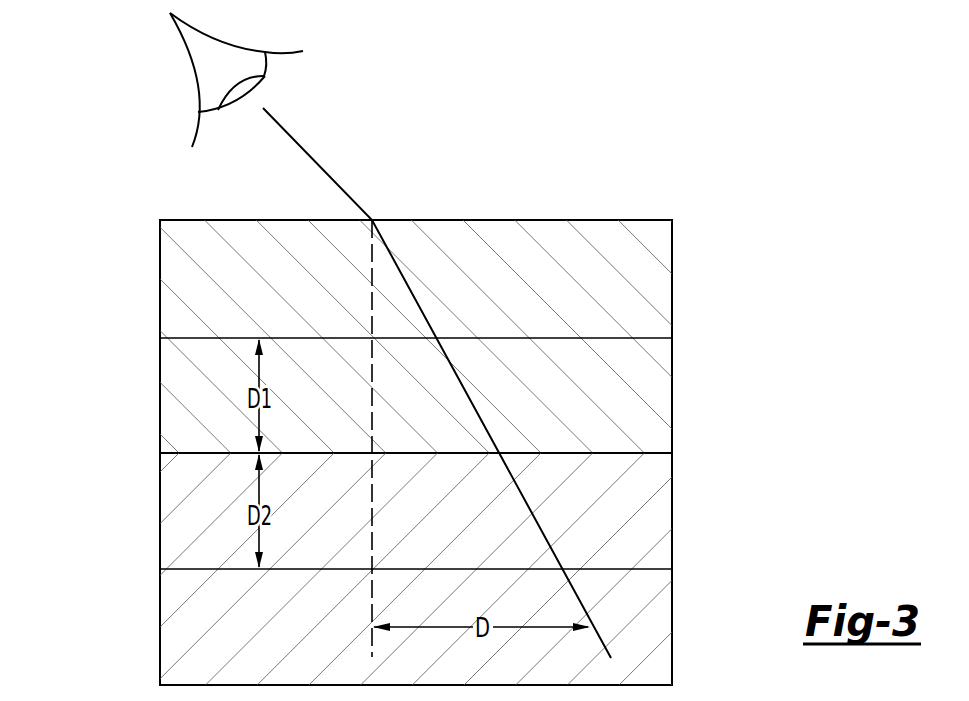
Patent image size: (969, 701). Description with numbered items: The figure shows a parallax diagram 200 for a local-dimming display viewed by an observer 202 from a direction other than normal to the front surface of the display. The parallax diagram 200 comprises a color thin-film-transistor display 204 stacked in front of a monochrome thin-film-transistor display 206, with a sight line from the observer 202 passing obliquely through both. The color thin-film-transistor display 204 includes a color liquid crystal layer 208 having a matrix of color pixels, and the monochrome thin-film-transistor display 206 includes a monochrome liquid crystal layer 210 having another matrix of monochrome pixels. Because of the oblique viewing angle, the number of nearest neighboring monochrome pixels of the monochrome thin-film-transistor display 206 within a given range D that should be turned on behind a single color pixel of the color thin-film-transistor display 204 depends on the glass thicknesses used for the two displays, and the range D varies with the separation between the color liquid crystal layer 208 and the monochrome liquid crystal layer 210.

The parallax diagram 200 is at (451, 382).
The observer 202 is at (190, 53).
The color thin-film-transistor display 204 is at (700, 221).
The monochrome thin-film-transistor display 206 is at (700, 453).
The color liquid crystal layer 208 is at (160, 338).
The monochrome liquid crystal layer 210 is at (160, 569).